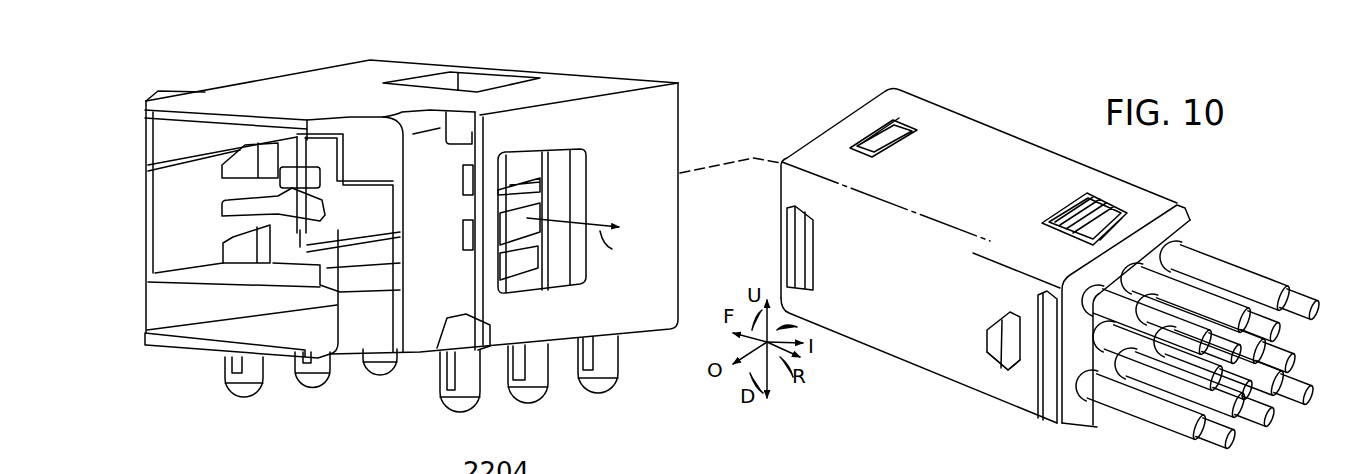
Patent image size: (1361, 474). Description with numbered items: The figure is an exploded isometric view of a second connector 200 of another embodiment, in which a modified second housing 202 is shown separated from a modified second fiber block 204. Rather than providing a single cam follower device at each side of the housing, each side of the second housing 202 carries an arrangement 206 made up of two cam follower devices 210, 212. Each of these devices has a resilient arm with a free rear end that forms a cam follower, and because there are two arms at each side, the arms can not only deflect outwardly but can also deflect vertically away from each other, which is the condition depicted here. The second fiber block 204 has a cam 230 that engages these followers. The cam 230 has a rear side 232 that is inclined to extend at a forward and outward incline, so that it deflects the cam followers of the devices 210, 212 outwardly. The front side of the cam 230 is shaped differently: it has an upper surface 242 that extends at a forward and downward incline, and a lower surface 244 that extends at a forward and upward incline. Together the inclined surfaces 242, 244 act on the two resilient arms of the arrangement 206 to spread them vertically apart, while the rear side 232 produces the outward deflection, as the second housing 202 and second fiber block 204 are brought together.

The second connector 200 is at (1052, 251).
The second housing 202 is at (446, 237).
The second fiber block 204 is at (943, 100).
The arrangement 206 is at (559, 210).
The cam follower device 210 is at (247, 168).
The cam follower device 212 is at (244, 245).
The cam 230 is at (997, 365).
The rear side 232 is at (1014, 358).
The upper surface 242 is at (1010, 312).
The lower surface 244 is at (993, 358).